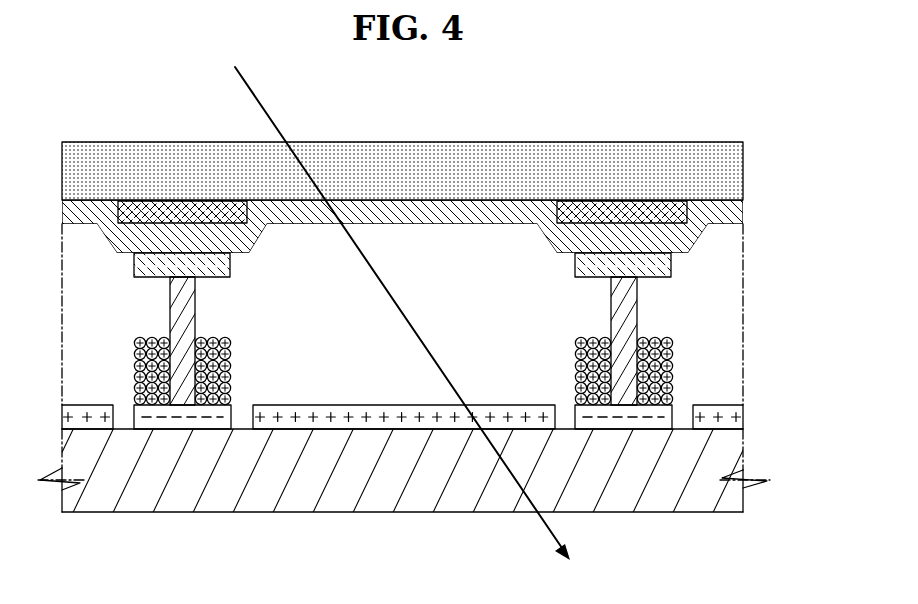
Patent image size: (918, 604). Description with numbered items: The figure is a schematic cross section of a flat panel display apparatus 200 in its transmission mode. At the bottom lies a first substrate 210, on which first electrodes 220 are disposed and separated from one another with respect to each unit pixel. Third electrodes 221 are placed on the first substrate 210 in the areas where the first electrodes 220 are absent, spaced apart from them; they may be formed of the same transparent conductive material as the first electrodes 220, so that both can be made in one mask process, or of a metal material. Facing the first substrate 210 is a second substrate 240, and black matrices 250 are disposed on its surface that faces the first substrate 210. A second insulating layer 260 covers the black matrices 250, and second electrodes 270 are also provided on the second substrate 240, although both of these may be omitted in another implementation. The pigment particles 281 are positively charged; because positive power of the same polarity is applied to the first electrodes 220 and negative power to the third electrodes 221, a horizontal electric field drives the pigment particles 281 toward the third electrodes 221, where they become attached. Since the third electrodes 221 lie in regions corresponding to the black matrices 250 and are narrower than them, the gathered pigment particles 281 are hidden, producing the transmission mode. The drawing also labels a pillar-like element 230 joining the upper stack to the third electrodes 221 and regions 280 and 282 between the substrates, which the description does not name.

The flat panel display apparatus 200 is at (727, 116).
The first substrate 210 is at (730, 453).
The first electrodes 220 is at (740, 418).
The third electrodes 221 is at (213, 423).
The contact plug 230 is at (623, 311).
The second substrate 240 is at (732, 172).
The black matrices 250 is at (184, 212).
The second insulating layer 260 is at (730, 218).
The second electrodes 270 is at (663, 265).
The cavity / air gap 280 is at (450, 316).
The pigment particles 281 is at (673, 367).
The gap region 282 is at (308, 377).